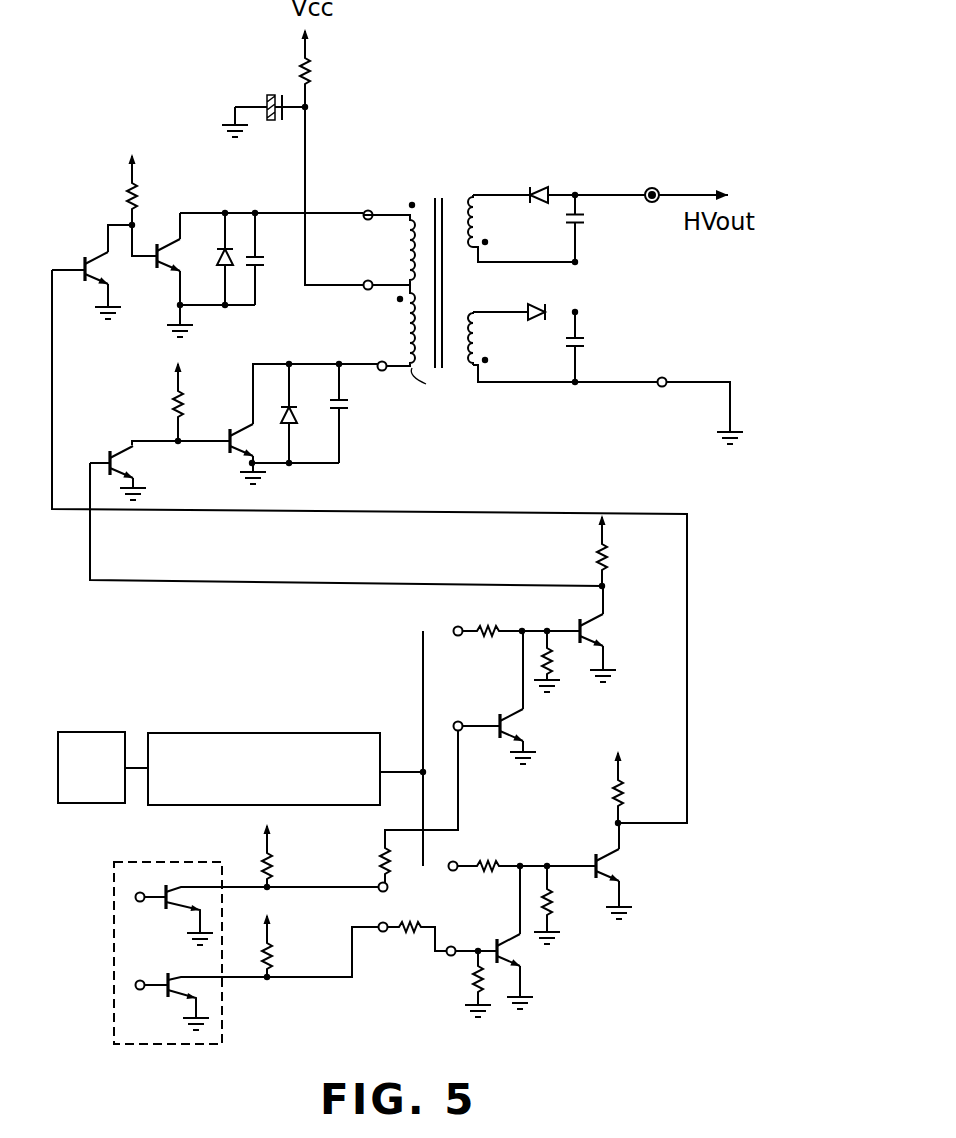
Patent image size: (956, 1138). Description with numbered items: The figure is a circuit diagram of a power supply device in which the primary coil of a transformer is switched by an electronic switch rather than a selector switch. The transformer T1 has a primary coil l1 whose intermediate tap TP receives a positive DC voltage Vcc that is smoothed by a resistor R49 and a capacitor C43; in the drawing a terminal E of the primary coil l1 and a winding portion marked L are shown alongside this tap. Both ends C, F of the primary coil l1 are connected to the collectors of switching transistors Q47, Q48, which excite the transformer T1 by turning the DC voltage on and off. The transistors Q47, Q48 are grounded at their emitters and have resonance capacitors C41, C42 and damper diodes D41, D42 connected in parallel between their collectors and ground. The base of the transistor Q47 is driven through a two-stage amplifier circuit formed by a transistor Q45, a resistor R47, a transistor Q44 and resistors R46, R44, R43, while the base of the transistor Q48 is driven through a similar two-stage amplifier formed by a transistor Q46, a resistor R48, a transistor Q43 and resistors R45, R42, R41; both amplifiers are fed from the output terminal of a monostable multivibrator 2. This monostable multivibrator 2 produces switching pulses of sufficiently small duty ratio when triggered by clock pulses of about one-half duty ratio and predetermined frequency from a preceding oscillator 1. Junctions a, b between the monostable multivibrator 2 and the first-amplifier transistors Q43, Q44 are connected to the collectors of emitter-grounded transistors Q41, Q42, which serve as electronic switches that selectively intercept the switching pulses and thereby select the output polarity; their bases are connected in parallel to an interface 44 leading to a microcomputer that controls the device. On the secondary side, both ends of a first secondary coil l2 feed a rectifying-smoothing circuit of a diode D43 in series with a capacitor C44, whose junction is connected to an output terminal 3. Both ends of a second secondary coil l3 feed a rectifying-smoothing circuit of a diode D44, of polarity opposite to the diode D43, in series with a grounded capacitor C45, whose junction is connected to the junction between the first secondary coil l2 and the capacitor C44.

The oscillator 1 is at (102, 730).
The monostable multivibrator 2 is at (341, 732).
The output terminal 3 is at (652, 186).
The interface 44 is at (222, 1005).
The transformer T1 is at (440, 195).
The primary winding L is at (392, 220).
The intermediate tap TP is at (388, 290).
The end of primary coil C is at (365, 210).
The emitter terminal E is at (366, 279).
The end of primary coil F is at (385, 375).
The primary coil l1 is at (426, 391).
The first secondary coil l2 is at (478, 226).
The second secondary coil l3 is at (478, 333).
The resistor R41 is at (483, 640).
The resistor R42 is at (554, 655).
The resistor R43 is at (480, 861).
The resistor R44 is at (554, 898).
The resistor R45 is at (608, 560).
The resistor R46 is at (612, 790).
The resistor R47 is at (125, 193).
The resistor R48 is at (172, 402).
The resistor R49 is at (313, 64).
The resonance capacitor C41 is at (266, 260).
The resonance capacitor C42 is at (350, 404).
The capacitor C43 is at (268, 95).
The capacitor C44 is at (586, 214).
The grounded capacitor C45 is at (586, 342).
The damper diode D41 is at (217, 263).
The damper diode D42 is at (300, 418).
The diode D43 is at (541, 186).
The diode D44 is at (536, 302).
The transistor Q41 is at (512, 738).
The transistor Q42 is at (506, 955).
The transistor Q43 is at (596, 628).
The transistor Q44 is at (606, 868).
The transistor Q45 is at (88, 258).
The transistor Q46 is at (111, 457).
The switching transistor Q47 is at (171, 230).
The switching transistor Q48 is at (240, 427).
The junction a is at (547, 629).
The junction b is at (548, 861).